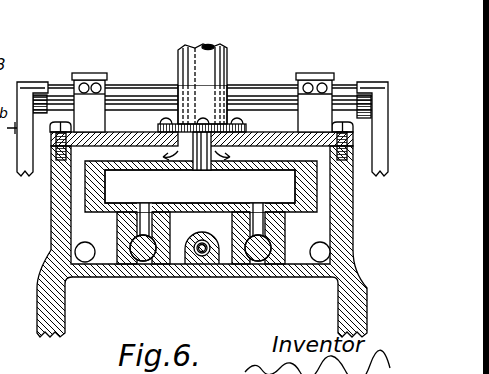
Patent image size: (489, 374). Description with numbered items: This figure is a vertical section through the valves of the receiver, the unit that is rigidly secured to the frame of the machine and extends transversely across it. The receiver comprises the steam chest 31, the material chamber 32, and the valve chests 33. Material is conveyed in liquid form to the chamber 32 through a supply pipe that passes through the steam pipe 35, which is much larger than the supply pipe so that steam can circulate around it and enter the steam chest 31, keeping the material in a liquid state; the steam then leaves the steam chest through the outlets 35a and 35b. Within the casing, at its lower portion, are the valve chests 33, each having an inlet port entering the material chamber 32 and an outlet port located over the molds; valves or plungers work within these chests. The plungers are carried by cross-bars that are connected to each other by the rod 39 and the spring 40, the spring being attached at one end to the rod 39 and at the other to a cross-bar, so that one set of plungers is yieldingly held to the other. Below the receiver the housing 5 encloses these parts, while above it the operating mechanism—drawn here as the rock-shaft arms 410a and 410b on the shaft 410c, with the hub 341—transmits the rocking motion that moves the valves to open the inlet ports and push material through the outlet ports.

The housing 5 is at (113, 247).
The steam chest 31 is at (320, 190).
The material chamber 32 is at (200, 186).
The valve chests 33 is at (146, 262).
The steam pipe 35 is at (222, 78).
The outlet 35a is at (86, 263).
The outlet 35b is at (317, 263).
The rod 39 is at (207, 258).
The spring 40 is at (197, 265).
The hub 341 is at (214, 46).
The right bracket 410a is at (383, 114).
The left bracket 410b is at (12, 116).
The horizontal shaft 410c is at (137, 102).